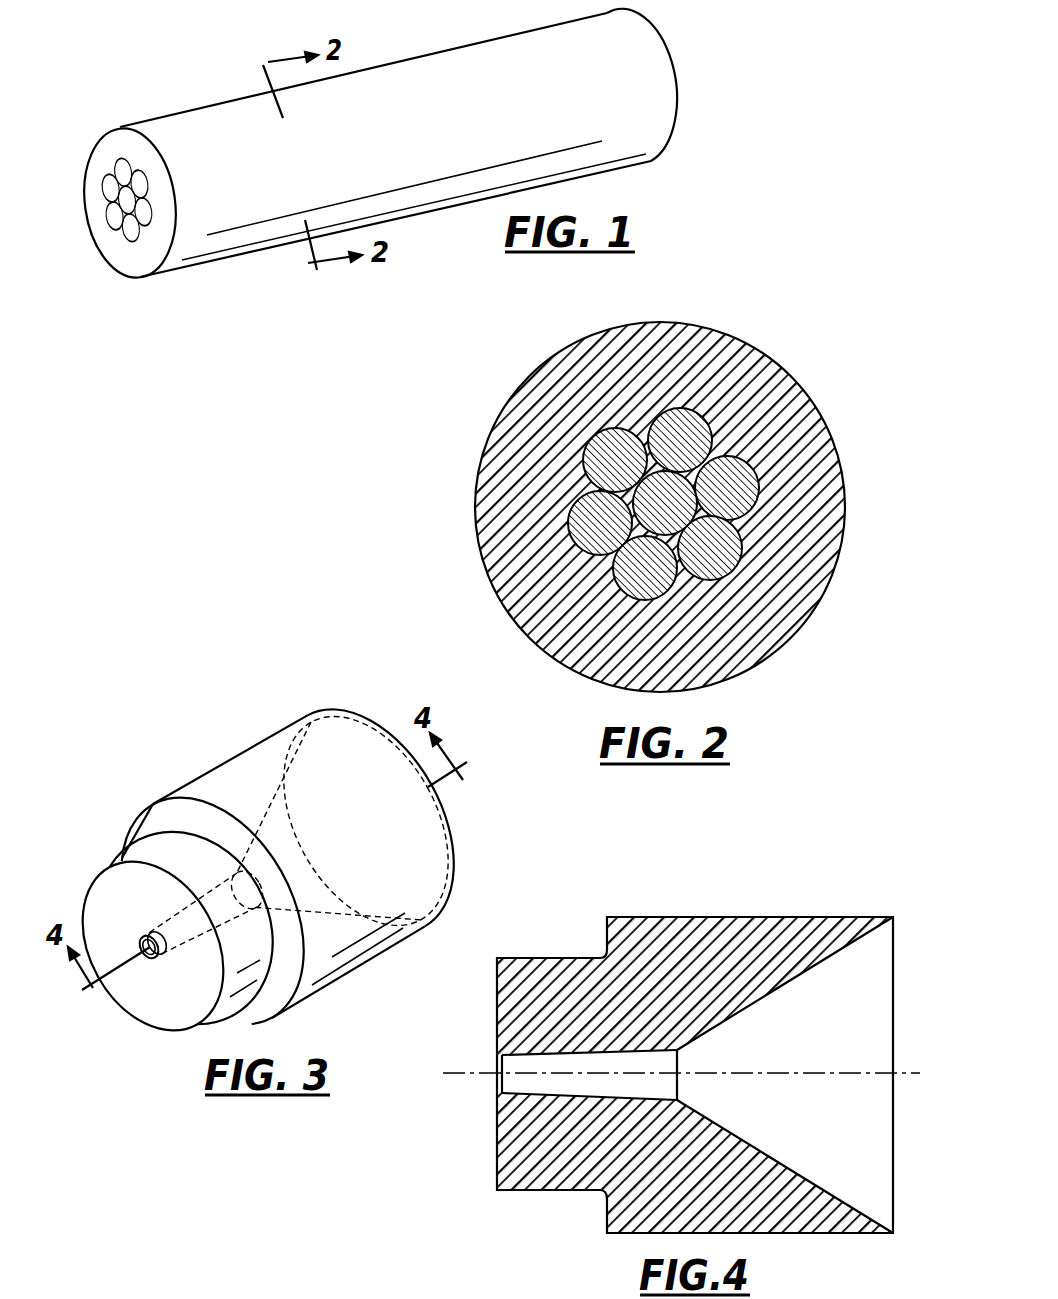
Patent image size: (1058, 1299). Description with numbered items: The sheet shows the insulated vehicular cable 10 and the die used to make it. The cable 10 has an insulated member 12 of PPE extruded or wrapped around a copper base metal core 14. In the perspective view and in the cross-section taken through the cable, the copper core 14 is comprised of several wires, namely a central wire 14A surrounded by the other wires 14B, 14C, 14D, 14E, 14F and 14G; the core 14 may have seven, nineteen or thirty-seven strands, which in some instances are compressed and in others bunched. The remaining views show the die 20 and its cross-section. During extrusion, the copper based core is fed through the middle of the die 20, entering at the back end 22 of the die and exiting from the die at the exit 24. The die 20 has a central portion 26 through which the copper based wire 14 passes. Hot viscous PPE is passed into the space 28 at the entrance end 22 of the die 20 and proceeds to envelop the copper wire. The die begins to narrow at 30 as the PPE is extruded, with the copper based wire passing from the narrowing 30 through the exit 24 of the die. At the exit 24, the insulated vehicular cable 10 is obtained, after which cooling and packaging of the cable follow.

In FIG. 1, the insulated vehicular cable 10 is at (433, 154).
In FIG. 2, the insulated vehicular cable 10 is at (645, 464).
In FIG. 1, the insulated member 12 is at (670, 105).
In FIG. 2, the insulated member 12 is at (792, 370).
In FIG. 1, the copper base metal core 14 is at (118, 213).
In FIG. 2, the copper base metal core 14 is at (645, 475).
In FIG. 2, the central wire 14A is at (670, 505).
In FIG. 2, the wire 14B is at (733, 468).
In FIG. 2, the wire 14C is at (673, 423).
In FIG. 2, the wire 14D is at (598, 437).
In FIG. 2, the wire 14E is at (583, 510).
In FIG. 2, the wire 14F is at (630, 578).
In FIG. 2, the wire 14G is at (723, 560).
In FIG. 3, the die 20 is at (268, 865).
In FIG. 4, the die 20 is at (680, 1041).
In FIG. 3, the back end 22 is at (333, 710).
In FIG. 3, the exit 24 is at (152, 959).
In FIG. 4, the exit 24 is at (497, 1057).
In FIG. 4, the central portion 26 is at (497, 1077).
In FIG. 4, the space 28 is at (820, 1017).
In FIG. 4, the narrowing 30 is at (680, 1099).